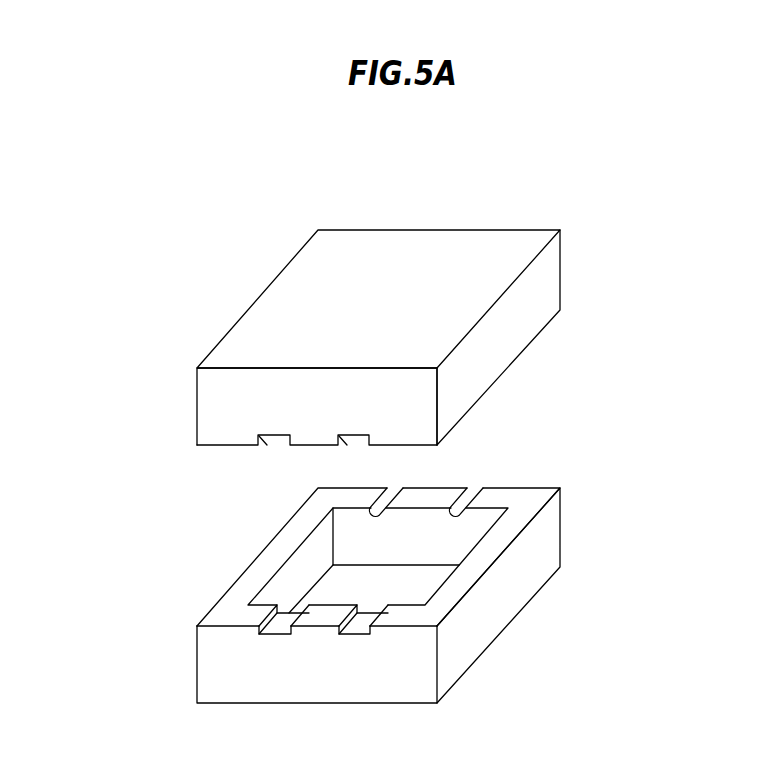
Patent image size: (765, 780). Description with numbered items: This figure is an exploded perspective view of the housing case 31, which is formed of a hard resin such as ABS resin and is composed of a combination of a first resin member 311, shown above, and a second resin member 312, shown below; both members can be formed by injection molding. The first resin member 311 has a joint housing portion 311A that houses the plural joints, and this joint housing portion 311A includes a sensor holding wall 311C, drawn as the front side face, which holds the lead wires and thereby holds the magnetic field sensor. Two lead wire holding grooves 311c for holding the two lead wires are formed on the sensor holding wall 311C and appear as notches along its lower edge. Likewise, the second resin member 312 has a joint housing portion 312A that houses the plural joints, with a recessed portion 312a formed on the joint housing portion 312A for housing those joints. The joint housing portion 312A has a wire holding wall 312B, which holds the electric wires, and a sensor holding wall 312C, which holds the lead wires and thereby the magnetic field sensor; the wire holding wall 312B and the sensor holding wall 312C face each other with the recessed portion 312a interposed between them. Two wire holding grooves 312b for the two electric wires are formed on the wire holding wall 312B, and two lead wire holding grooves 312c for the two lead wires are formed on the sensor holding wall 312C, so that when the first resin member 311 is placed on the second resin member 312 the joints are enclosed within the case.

The housing case 31 is at (287, 190).
The first resin member 311 is at (300, 250).
The joint housing portion 311A is at (560, 230).
The sensor holding wall 311C is at (213, 403).
The lead wire holding grooves 311c is at (348, 445).
The second resin member 312 is at (212, 693).
The joint housing portion 312A is at (560, 488).
The wire holding wall 312B is at (355, 535).
The recessed portion 312a is at (418, 581).
The wire holding grooves 312b is at (407, 480).
The lead wire holding grooves 312c is at (353, 645).
The sensor holding wall 312C is at (213, 657).